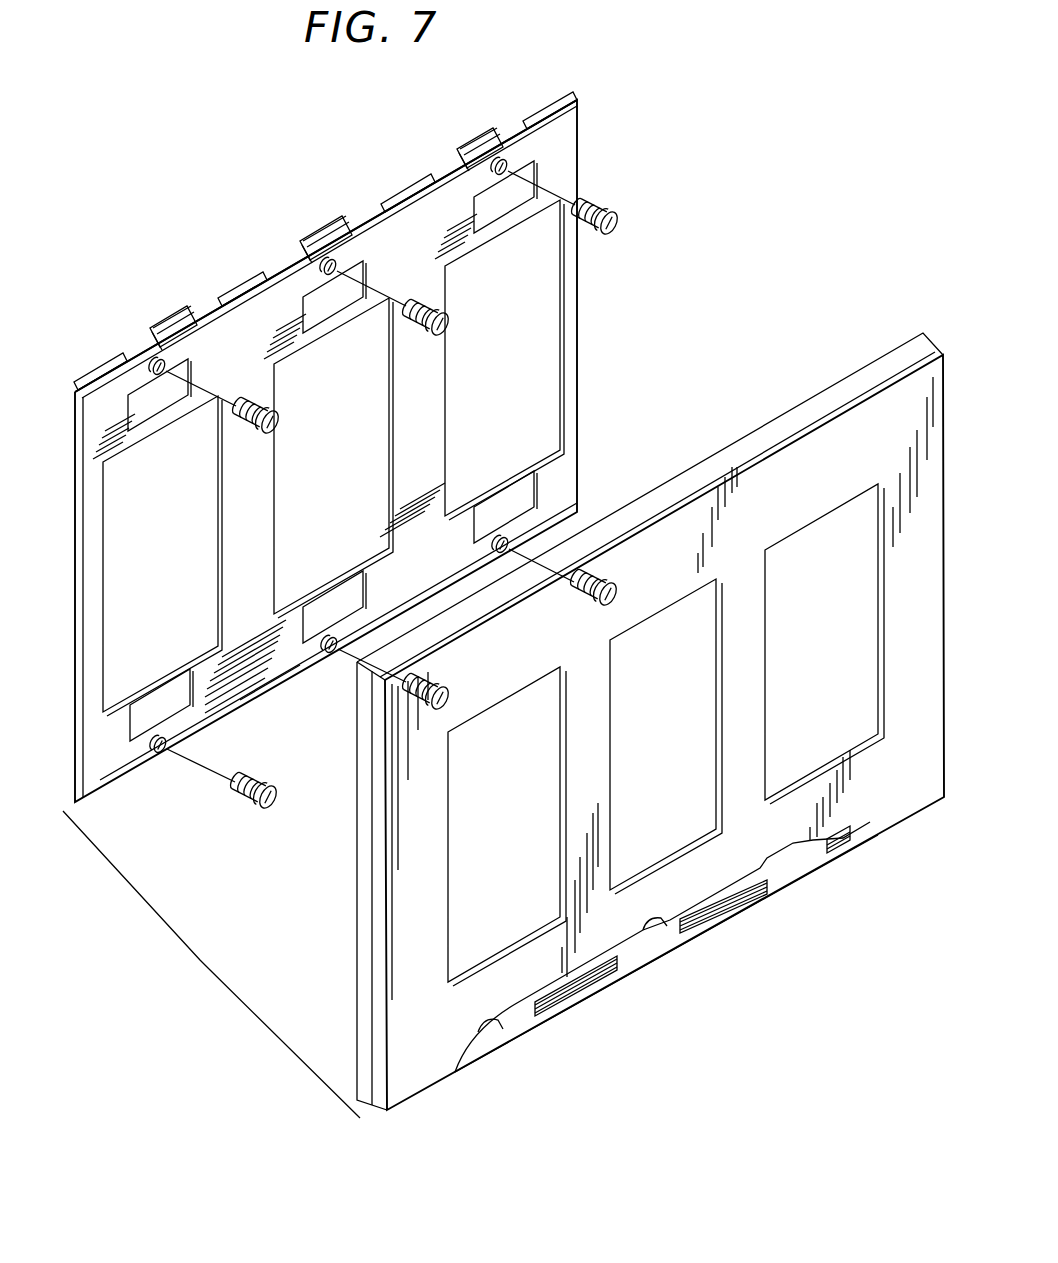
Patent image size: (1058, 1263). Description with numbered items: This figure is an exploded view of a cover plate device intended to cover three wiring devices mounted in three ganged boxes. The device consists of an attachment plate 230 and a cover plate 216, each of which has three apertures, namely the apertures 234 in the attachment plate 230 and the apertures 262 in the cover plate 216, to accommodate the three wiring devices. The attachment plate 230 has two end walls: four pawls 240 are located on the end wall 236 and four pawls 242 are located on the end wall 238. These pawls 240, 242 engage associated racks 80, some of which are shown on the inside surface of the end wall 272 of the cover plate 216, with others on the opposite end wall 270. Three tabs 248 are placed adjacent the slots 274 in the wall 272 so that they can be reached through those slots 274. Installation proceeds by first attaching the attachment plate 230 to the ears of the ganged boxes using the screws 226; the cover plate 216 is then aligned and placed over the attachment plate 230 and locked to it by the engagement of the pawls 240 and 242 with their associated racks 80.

The rack 80 is at (737, 908).
The cover plate 216 is at (372, 955).
The screws 226 is at (612, 588).
The attachment plate 230 is at (590, 354).
The apertures 234 is at (216, 556).
The end wall 236 is at (283, 683).
The end wall 238 is at (207, 313).
The pawls 240 is at (570, 497).
The pawls 242 is at (122, 370).
The tabs 248 is at (160, 332).
The apertures 262 is at (553, 775).
The end wall 270 is at (700, 453).
The end wall 272 is at (633, 962).
The slots 274 is at (498, 1027).